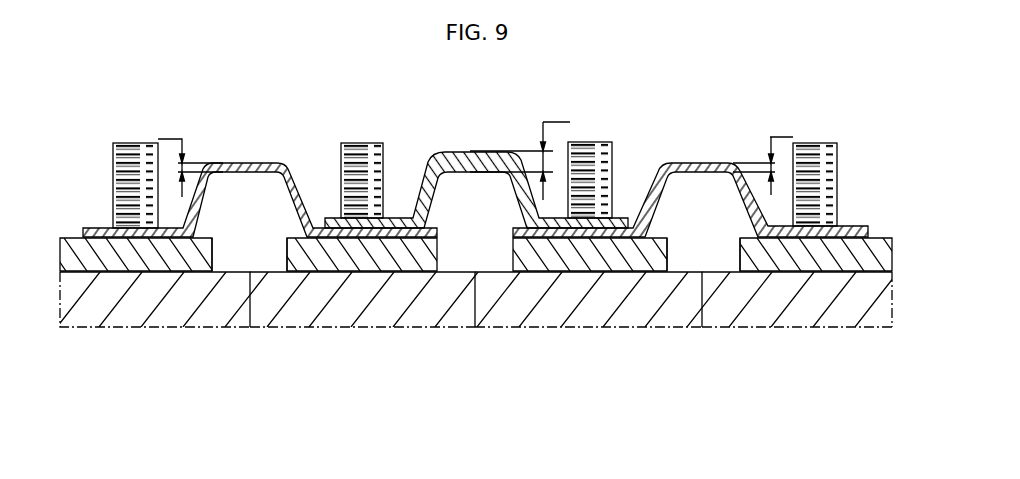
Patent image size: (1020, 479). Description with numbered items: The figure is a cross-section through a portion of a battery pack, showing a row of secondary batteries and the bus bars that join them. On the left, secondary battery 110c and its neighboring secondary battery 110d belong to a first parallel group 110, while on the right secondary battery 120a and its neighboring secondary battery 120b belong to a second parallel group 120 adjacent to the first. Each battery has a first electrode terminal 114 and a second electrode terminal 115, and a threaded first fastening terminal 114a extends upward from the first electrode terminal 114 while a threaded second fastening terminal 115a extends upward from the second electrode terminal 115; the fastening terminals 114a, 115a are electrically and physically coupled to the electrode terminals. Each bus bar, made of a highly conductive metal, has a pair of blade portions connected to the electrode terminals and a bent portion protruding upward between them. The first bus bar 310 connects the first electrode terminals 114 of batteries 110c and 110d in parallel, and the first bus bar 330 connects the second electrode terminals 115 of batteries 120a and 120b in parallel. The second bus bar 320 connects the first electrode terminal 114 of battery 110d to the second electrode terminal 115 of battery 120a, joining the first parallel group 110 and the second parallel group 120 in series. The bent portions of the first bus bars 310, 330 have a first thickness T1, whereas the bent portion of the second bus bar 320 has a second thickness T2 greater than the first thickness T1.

The first parallel group 110 is at (498, 362).
The secondary battery 110c is at (177, 315).
The secondary battery 110d is at (160, 401).
The second parallel group 120 is at (498, 362).
The secondary battery 120a is at (649, 315).
The secondary battery 120b is at (630, 401).
The first electrode terminal 114 is at (288, 238).
The second electrode terminal 115 is at (740, 238).
The first fastening terminal 114a is at (136, 150).
The second fastening terminal 115a is at (592, 143).
The first bus bar 310 is at (250, 162).
The second bus bar 320 is at (476, 152).
The first bus bar 330 is at (698, 162).
The first thickness T1 is at (475, 155).
The second thickness T2 is at (520, 149).